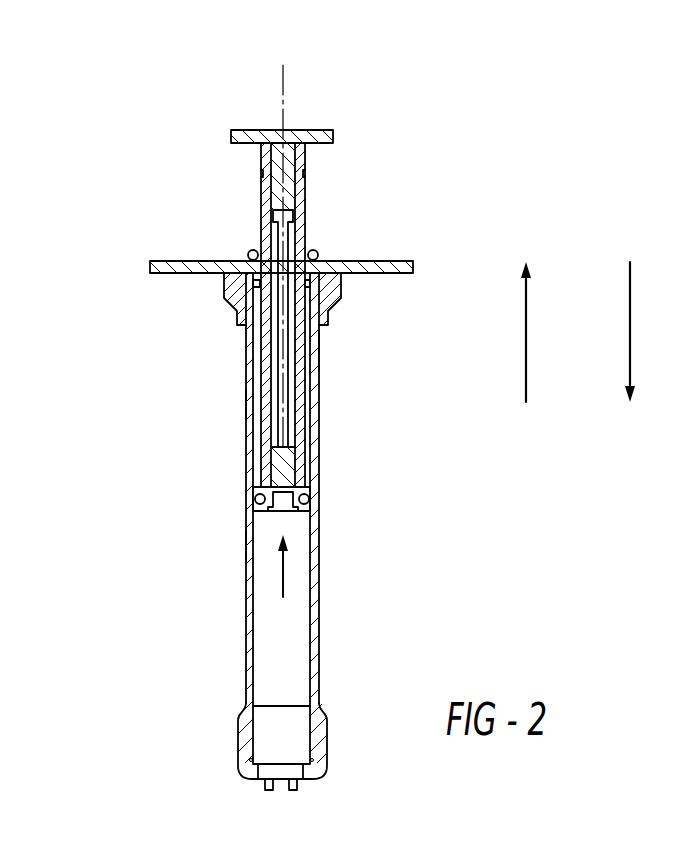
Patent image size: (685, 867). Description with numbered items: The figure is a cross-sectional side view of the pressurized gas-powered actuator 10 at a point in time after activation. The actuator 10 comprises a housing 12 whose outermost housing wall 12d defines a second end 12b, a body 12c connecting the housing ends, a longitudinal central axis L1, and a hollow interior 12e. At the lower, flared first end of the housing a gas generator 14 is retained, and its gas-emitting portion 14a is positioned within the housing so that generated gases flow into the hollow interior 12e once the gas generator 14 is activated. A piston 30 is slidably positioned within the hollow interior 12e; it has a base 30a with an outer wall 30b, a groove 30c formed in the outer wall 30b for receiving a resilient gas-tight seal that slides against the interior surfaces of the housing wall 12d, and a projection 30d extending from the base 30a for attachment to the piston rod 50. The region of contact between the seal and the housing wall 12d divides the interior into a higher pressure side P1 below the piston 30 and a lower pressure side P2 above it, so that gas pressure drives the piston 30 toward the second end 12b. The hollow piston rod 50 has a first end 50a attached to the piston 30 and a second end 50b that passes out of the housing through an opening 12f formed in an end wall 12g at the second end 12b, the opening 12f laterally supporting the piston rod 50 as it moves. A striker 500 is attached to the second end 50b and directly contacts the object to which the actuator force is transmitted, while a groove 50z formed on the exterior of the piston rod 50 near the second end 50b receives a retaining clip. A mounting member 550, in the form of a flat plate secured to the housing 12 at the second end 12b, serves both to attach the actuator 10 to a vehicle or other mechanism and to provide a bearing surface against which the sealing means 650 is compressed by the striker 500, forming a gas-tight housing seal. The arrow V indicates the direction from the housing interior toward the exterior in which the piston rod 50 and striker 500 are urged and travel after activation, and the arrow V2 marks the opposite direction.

The actuator 10 is at (575, 523).
The housing 12 is at (243, 349).
The second end 12b is at (253, 290).
The body 12c is at (319, 348).
The outermost housing wall 12d is at (247, 405).
The hollow interior 12e is at (267, 542).
The opening 12f is at (248, 263).
The end wall 12g is at (310, 272).
The gas generator 14 is at (268, 774).
The gas-emitting portion 14a is at (282, 707).
The piston 30 is at (285, 478).
The base 30a is at (303, 512).
The outer wall 30b is at (252, 490).
The groove 30c is at (306, 501).
The projection 30d is at (285, 460).
The piston rod 50 is at (304, 233).
The first end 50a is at (263, 450).
The second end 50b is at (261, 164).
The groove 50z is at (305, 178).
The striker 500 is at (252, 130).
The mounting member 550 is at (410, 262).
The sealing means 650 is at (248, 252).
The longitudinal central axis L1 is at (282, 117).
The higher pressure side P1 is at (268, 582).
The lower pressure side P2 is at (253, 433).
The direction arrow V is at (534, 332).
The downward velocity V2 is at (645, 332).